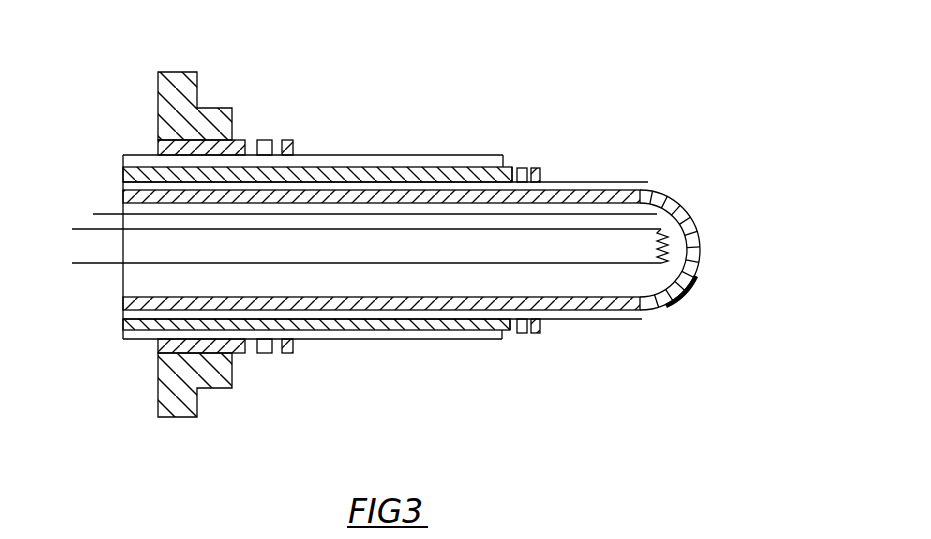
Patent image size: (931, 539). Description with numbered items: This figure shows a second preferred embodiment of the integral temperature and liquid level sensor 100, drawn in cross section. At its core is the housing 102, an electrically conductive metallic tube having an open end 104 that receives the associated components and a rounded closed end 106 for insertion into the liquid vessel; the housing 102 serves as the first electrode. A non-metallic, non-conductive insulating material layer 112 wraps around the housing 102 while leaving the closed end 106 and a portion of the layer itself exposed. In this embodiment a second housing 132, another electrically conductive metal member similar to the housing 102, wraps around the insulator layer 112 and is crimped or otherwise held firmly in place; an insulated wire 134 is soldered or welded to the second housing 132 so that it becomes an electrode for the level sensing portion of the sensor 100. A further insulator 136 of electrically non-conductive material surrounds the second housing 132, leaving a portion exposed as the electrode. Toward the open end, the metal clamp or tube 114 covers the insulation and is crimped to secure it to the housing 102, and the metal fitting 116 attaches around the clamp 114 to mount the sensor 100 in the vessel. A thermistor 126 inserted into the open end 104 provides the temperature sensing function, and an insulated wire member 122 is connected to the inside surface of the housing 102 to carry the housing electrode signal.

The integral temperature and liquid level sensor 100 is at (584, 345).
The housing 102 is at (703, 274).
The open end 104 is at (133, 278).
The closed end 106 is at (678, 298).
The insulating material layer 112 is at (650, 180).
The metal clamp or tube 114 is at (301, 146).
The metal fitting 116 is at (204, 75).
The insulated wire member 122 is at (95, 214).
The thermistor 126 is at (672, 245).
The second housing 132 is at (547, 168).
The insulated wire 134 is at (122, 177).
The insulator 136 is at (490, 150).